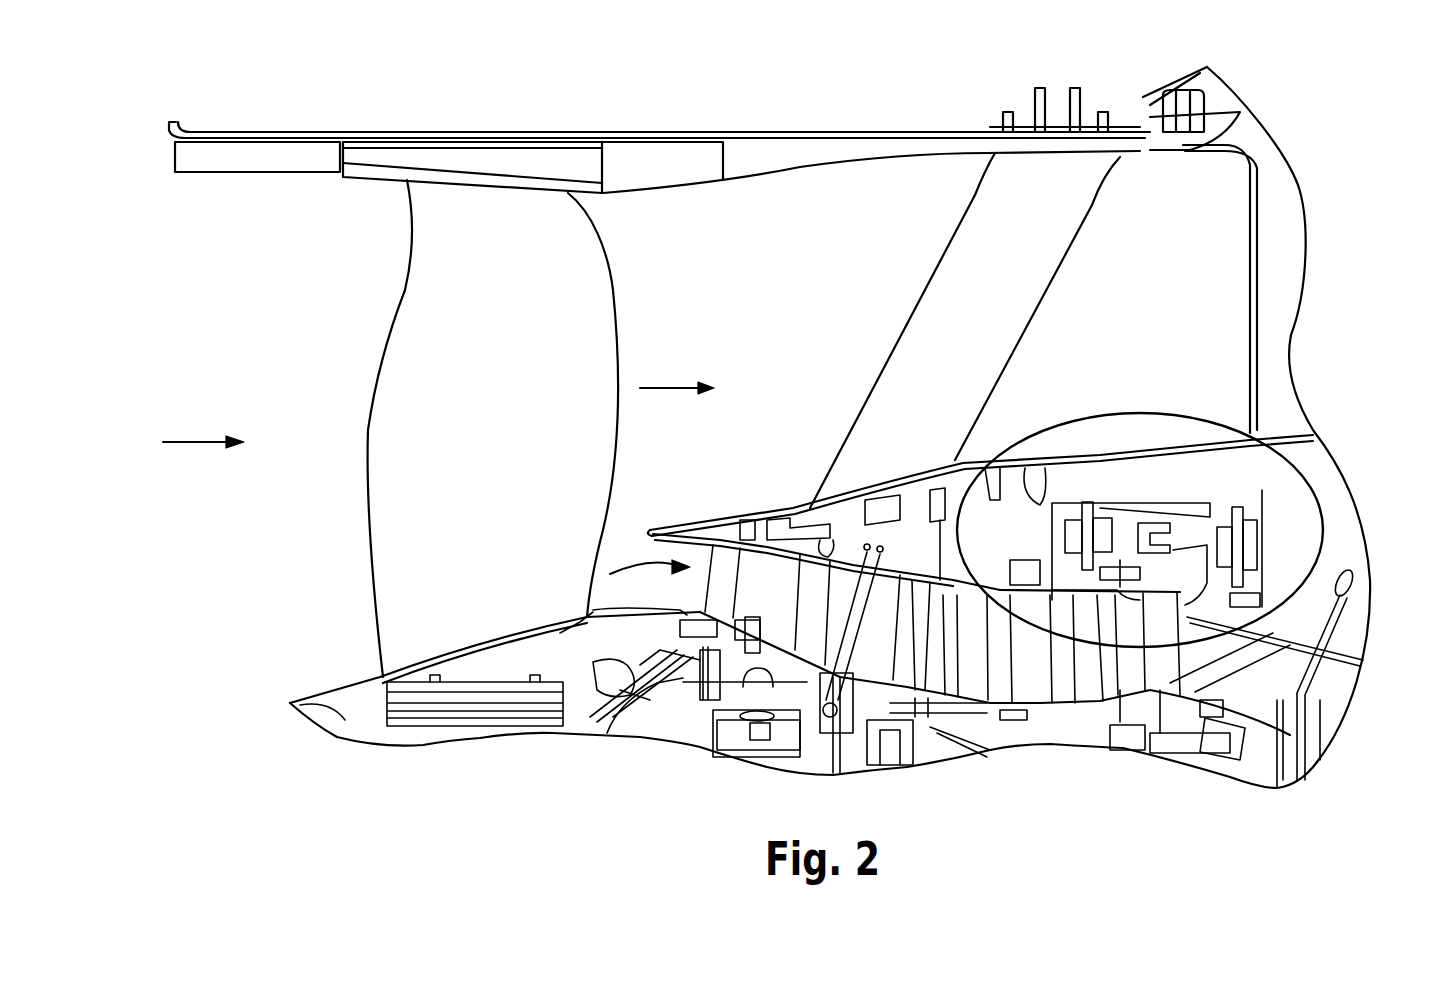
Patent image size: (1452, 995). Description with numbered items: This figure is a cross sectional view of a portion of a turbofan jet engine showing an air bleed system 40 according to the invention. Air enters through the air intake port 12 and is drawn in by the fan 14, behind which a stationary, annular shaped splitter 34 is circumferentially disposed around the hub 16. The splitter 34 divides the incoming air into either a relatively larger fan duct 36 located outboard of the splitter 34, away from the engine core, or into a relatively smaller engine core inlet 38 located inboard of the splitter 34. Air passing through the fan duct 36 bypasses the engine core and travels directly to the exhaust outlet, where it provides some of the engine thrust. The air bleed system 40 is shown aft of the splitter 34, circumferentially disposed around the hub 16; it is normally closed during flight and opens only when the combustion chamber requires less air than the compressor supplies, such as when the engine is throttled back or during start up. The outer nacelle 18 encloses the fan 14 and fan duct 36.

The air intake port 12 is at (181, 445).
The fan 14 is at (407, 290).
The hub 16 is at (313, 702).
The nacelle 18 is at (680, 130).
The splitter 34 is at (686, 518).
The fan duct 36 is at (806, 331).
The engine core inlet 38 is at (816, 619).
The air bleed system 40 is at (1327, 487).